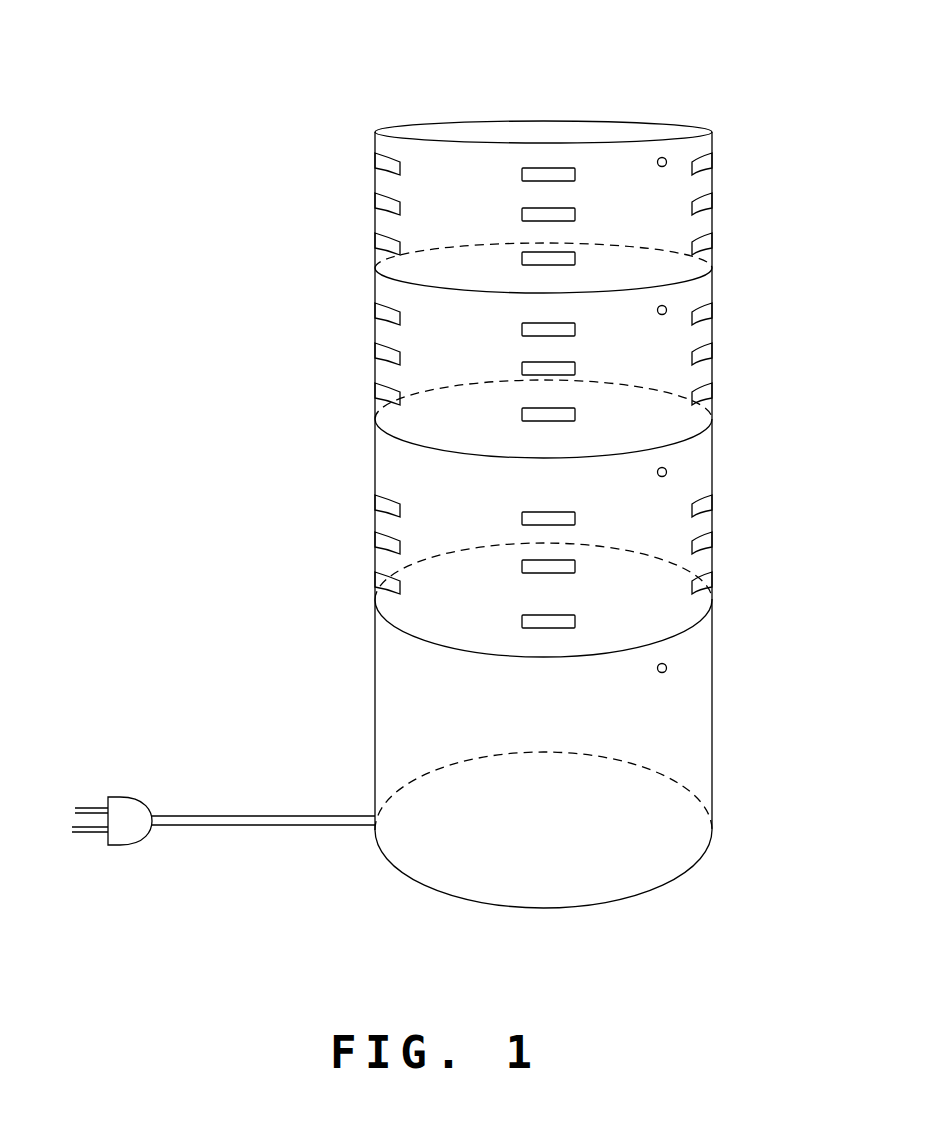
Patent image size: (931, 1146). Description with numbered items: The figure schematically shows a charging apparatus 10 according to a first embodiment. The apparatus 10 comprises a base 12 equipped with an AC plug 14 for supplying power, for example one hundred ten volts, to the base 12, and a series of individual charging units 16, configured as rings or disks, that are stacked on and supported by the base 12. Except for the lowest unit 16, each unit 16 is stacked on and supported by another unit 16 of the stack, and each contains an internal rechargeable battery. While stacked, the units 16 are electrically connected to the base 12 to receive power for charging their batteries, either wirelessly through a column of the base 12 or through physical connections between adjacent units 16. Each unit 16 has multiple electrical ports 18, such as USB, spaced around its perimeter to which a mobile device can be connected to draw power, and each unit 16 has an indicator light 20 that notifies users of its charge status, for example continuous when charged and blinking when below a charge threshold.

The charging apparatus 10 is at (348, 73).
The base 12 is at (410, 715).
The AC plug 14 is at (120, 847).
The charging units 16 is at (420, 222).
The electrical ports 18 is at (528, 178).
The indicator light 20 is at (668, 471).